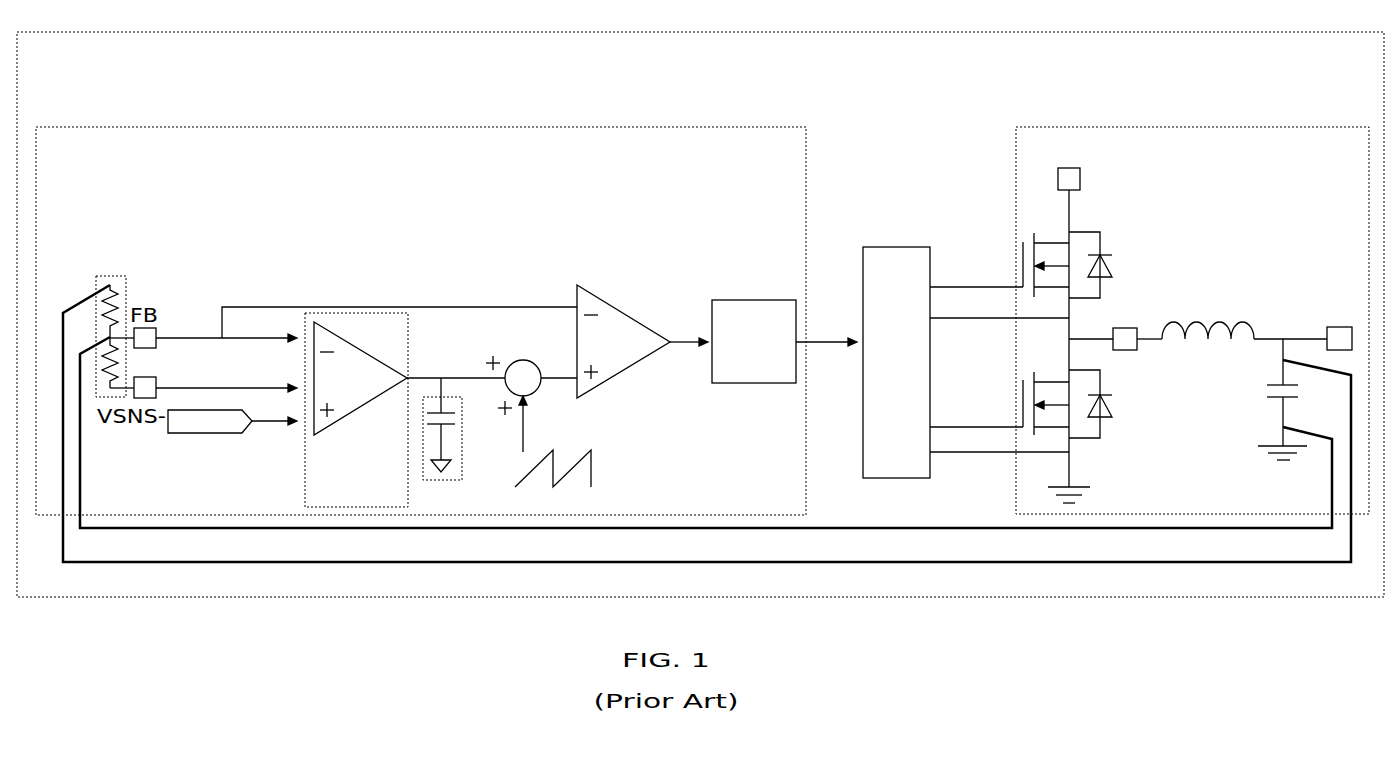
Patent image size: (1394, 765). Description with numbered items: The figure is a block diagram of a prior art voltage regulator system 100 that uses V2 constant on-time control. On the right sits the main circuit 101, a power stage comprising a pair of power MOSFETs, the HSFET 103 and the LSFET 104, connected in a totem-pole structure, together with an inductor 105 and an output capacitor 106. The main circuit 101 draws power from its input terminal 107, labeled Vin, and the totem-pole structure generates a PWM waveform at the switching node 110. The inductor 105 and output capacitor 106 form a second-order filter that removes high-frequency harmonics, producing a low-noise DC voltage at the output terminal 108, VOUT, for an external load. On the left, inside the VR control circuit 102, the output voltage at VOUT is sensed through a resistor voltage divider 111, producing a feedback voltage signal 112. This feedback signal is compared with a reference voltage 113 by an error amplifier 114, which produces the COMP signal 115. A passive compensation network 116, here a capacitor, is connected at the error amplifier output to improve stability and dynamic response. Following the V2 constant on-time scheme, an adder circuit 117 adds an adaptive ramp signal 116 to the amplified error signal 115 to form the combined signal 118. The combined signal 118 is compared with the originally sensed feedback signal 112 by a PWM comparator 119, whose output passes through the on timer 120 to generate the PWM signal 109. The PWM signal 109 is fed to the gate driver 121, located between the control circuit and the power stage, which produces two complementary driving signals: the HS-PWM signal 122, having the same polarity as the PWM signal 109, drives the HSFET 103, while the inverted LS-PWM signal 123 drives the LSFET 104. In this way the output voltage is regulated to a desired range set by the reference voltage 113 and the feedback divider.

The voltage regulator system 100 is at (714, 85).
The main circuit 101 is at (1273, 153).
The VR control circuit 102 is at (610, 166).
The HSFET 103 is at (1158, 275).
The LSFET 104 is at (1162, 415).
The inductor 105 is at (1237, 316).
The output capacitor 106 is at (1342, 426).
The input terminal 107 is at (1168, 185).
The output terminal 108 is at (1352, 325).
The PWM signal 109 is at (848, 335).
The switching node 110 is at (1143, 326).
The resistor voltage divider 111 is at (97, 399).
The feedback voltage signal 112 is at (297, 376).
The reference voltage 113 is at (255, 428).
The error amplifier 114 is at (372, 503).
The COMP signal 115 is at (473, 338).
The compensation network and adaptive ramp signal 116 is at (455, 503).
The adder circuit 117 is at (552, 343).
The combined signal 118 is at (575, 375).
The PWM comparator 119 is at (630, 286).
The on timer 120 is at (771, 380).
The gate driver 121 is at (913, 398).
The HS-PWM signal 122 is at (992, 283).
The LS-PWM signal 123 is at (995, 421).